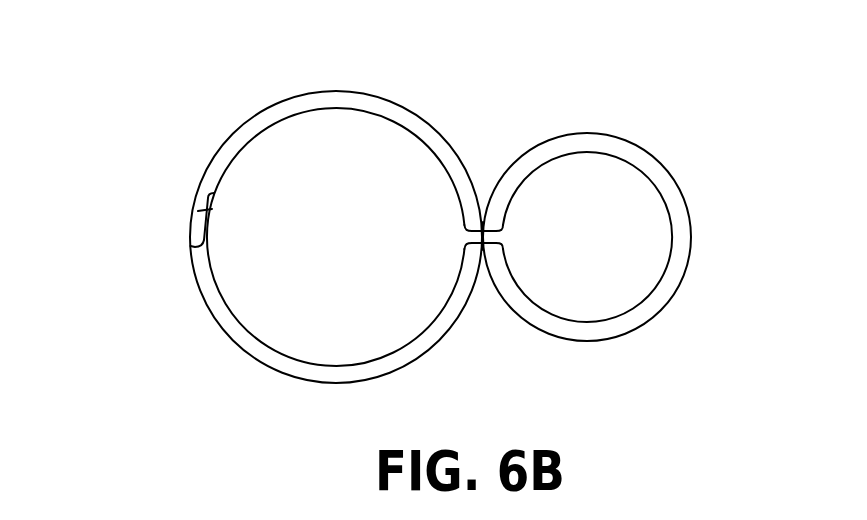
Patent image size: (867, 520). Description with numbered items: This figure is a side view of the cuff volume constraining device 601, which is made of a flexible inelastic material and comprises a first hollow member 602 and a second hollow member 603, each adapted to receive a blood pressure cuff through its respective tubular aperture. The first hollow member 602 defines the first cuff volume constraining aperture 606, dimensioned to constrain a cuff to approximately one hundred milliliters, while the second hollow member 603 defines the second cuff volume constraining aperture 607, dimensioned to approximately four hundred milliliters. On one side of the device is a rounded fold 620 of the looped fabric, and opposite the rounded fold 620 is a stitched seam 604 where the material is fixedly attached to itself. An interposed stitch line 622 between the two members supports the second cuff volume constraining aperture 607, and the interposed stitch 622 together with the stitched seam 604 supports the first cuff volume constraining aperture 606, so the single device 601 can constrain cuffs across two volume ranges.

The cuff volume constraining device 601 is at (212, 105).
The first hollow member 602 is at (254, 352).
The second hollow member 603 is at (668, 172).
The seam 604 is at (178, 201).
The first cuff volume constraining aperture 606 is at (321, 150).
The second cuff volume constraining aperture 607 is at (600, 190).
The rounded fold 620 is at (712, 245).
The interposed stitch line 622 is at (484, 290).